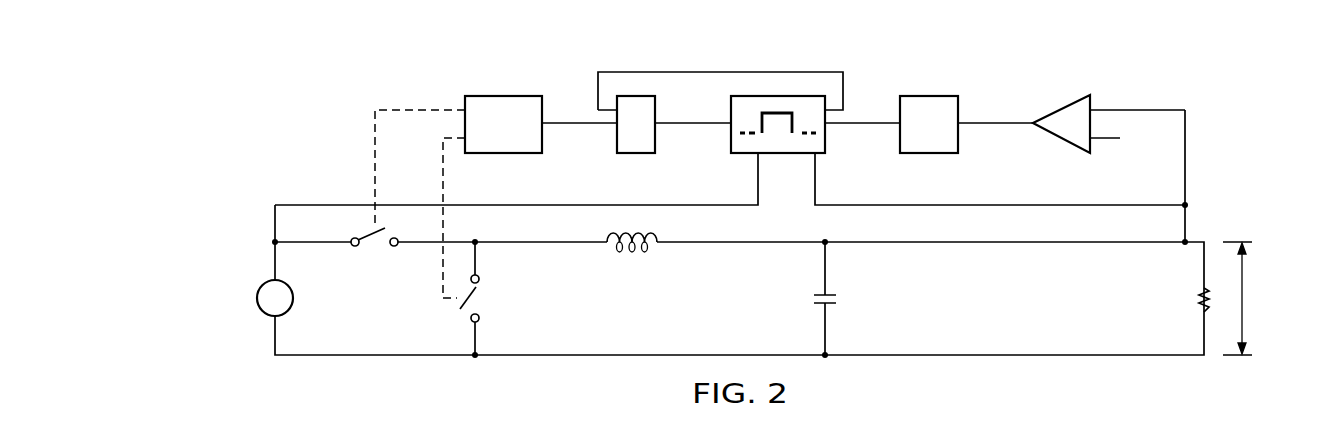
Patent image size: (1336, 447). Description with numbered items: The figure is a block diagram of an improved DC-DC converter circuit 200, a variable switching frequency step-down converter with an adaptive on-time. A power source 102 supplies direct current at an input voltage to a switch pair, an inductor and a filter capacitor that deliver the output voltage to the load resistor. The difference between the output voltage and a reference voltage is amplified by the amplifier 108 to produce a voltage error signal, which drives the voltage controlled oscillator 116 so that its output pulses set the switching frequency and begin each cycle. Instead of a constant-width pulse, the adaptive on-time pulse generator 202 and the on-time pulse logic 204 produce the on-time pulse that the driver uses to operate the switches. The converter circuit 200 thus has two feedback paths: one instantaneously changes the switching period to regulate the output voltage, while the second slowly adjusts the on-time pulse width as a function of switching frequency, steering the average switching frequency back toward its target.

The DC-DC converter circuit 200 is at (293, 112).
The power source 102 is at (257, 298).
The on-time pulse logic 204 is at (615, 138).
The adaptive on-time pulse generator 202 is at (728, 138).
The amplifier 108 is at (1065, 107).
The voltage controlled oscillator 116 is at (928, 153).